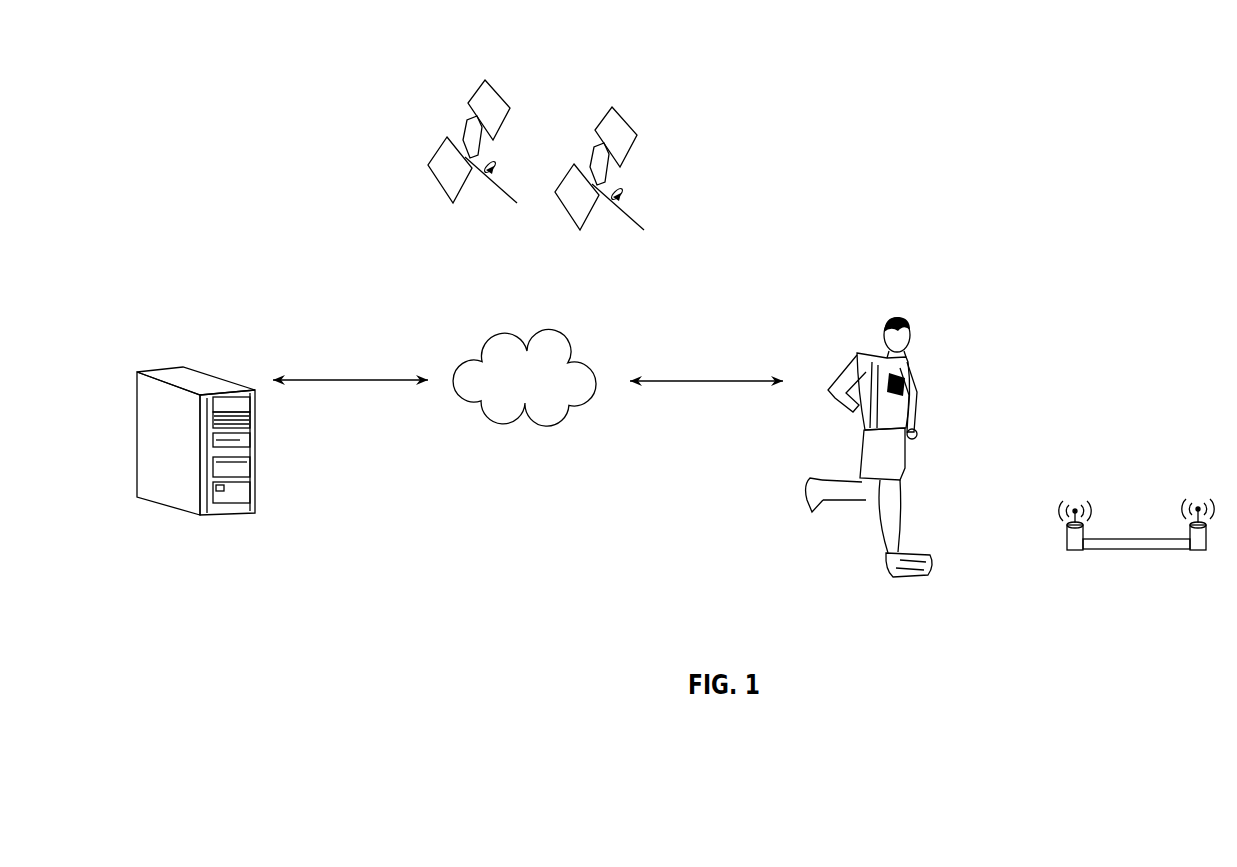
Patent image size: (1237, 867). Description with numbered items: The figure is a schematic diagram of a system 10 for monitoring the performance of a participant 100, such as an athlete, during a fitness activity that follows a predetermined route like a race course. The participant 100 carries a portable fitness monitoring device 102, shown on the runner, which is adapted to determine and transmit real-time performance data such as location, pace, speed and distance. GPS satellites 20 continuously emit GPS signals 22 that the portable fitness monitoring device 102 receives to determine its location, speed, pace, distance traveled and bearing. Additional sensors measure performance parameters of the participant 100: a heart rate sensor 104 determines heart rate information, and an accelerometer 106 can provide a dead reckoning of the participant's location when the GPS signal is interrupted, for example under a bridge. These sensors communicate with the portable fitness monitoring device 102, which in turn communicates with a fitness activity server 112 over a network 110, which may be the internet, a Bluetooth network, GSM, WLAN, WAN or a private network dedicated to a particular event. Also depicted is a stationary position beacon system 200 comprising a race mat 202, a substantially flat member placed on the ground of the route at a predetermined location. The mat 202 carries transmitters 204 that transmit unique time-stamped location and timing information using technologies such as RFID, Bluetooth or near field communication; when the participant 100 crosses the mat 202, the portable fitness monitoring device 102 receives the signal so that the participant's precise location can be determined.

The system 10 is at (186, 96).
The GPS satellite 20 is at (498, 105).
The GPS signal 22 is at (498, 170).
The participant 100 is at (903, 318).
The portable fitness monitoring device 102 is at (860, 357).
The heart rate sensor 104 is at (915, 383).
The accelerometer 106 is at (888, 560).
The network 110 is at (552, 328).
The fitness activity server 112 is at (200, 372).
The position beacon system 200 is at (1044, 564).
The race mat 202 is at (1113, 552).
The transmitter 204 is at (1075, 505).